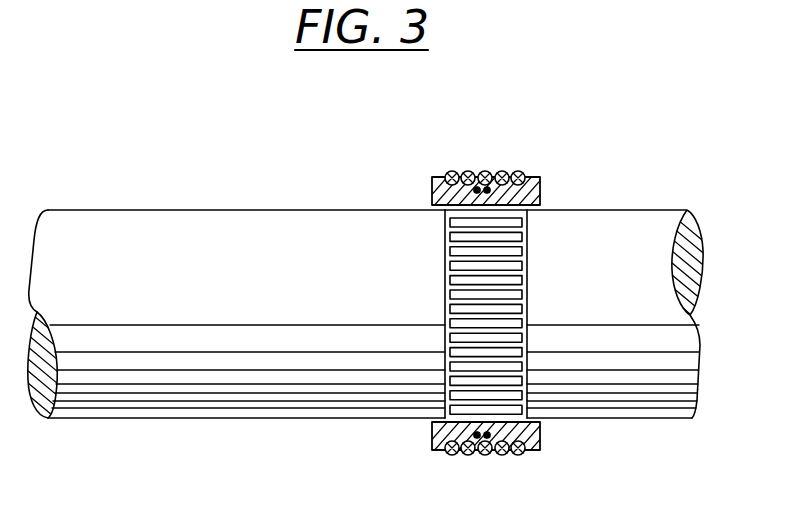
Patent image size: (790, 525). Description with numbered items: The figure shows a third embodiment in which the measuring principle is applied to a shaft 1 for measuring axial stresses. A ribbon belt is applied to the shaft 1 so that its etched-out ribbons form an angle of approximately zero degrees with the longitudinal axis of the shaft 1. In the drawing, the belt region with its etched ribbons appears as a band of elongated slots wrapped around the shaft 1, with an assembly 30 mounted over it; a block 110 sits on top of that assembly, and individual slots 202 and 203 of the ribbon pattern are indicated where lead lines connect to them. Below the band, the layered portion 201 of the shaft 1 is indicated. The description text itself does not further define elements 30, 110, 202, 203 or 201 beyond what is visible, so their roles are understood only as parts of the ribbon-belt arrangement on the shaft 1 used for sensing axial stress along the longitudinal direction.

The shaft 1 is at (667, 210).
The sensor assembly 30 is at (426, 164).
The holder block 110 is at (427, 197).
The slot 202 is at (530, 228).
The slots 203 is at (522, 288).
The layers 201 is at (530, 389).